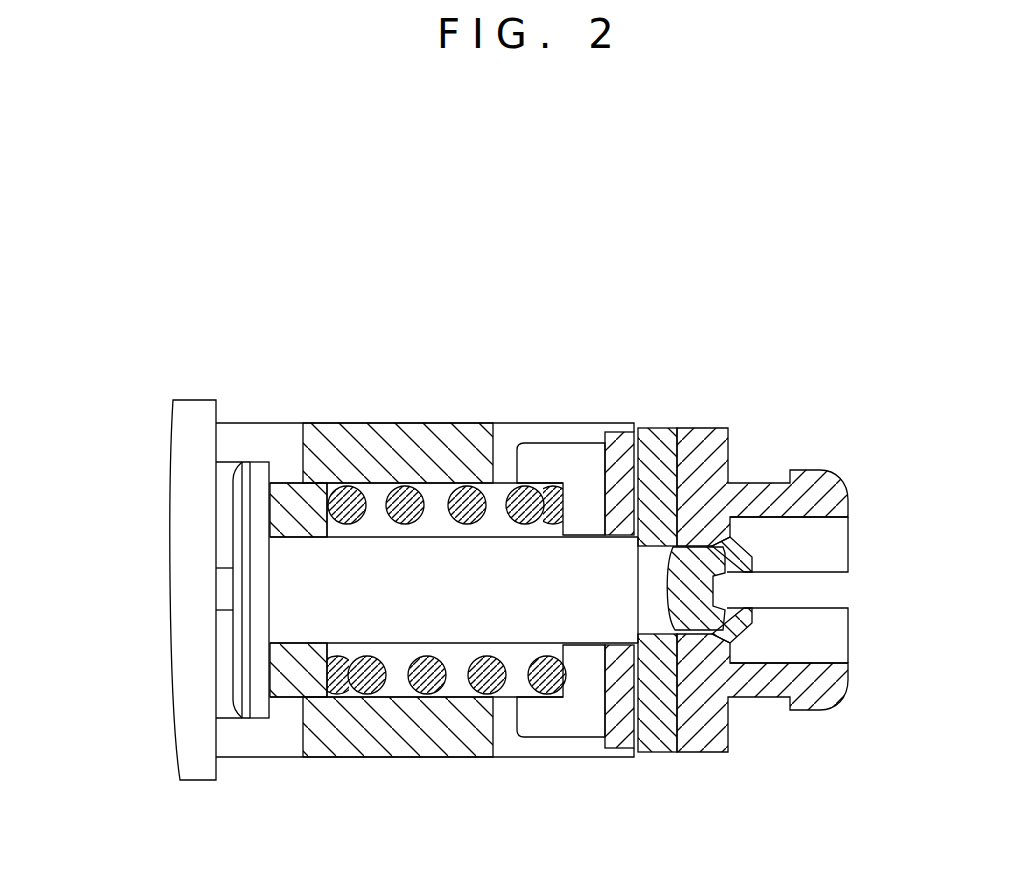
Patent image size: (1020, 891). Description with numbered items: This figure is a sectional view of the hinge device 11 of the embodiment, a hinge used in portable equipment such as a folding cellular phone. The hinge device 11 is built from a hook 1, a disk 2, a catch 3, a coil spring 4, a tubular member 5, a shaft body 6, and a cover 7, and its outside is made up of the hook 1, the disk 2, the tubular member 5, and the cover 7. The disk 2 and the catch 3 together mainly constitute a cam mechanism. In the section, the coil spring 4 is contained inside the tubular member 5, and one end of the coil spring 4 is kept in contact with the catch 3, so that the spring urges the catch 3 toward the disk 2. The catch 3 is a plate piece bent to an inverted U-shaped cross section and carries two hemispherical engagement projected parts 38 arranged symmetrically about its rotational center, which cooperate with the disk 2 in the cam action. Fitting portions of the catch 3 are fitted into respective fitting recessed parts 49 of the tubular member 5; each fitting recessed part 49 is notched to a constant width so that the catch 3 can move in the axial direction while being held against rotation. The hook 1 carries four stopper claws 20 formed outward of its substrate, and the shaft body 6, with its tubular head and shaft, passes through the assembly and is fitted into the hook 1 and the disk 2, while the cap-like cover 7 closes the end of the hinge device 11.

The hinge device 11 is at (750, 243).
The hook 1 is at (706, 428).
The disk 2 is at (650, 428).
The catch 3 is at (580, 748).
The coil spring 4 is at (400, 757).
The tubular member 5 is at (437, 423).
The shaft body 6 is at (250, 515).
The cover 7 is at (170, 657).
The stopper claws 20 is at (827, 482).
The engagement projected parts 38 is at (668, 750).
The fitting recessed parts 49 is at (543, 443).